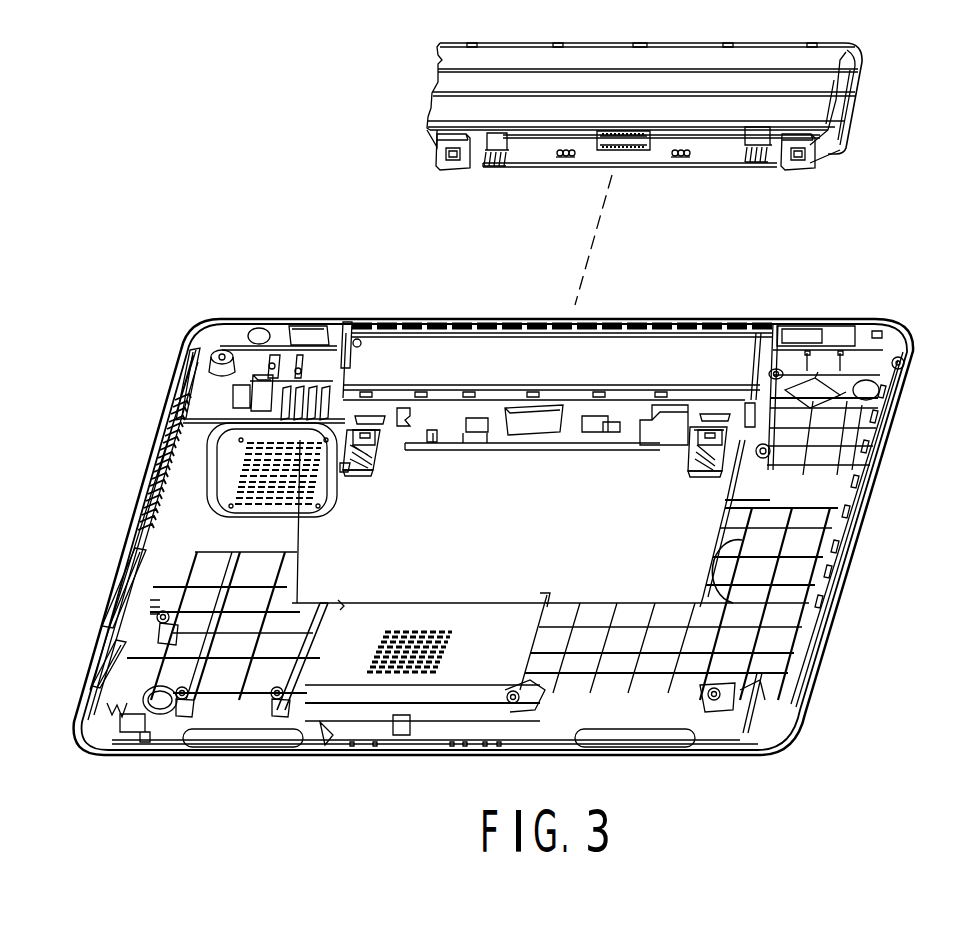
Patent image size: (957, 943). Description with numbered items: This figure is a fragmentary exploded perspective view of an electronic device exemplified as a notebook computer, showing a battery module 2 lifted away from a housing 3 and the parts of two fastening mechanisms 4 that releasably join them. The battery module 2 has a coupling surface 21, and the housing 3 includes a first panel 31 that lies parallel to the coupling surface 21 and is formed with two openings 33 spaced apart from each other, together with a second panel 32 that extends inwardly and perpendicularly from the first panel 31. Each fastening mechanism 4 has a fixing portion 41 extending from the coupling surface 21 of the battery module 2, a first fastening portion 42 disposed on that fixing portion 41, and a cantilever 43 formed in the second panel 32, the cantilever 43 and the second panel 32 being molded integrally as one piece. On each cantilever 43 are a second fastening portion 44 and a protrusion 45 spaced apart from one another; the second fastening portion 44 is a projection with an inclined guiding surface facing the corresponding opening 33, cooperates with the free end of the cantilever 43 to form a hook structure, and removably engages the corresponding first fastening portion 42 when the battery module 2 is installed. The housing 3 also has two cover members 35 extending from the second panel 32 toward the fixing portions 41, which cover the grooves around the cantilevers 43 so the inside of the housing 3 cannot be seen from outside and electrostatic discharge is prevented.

The battery module 2 is at (876, 66).
The coupling surface 21 is at (825, 140).
The fixing portion 41 is at (812, 160).
The first fastening portion 42 is at (797, 156).
The housing 3 is at (858, 557).
The first panel 31 is at (742, 417).
The second panel 32 is at (605, 568).
The opening 33 is at (697, 412).
The cover member 35 is at (712, 427).
The fastening mechanism 4 is at (425, 469).
The cantilever 43 is at (697, 473).
The second fastening portion 44 is at (720, 462).
The protrusion 45 is at (693, 456).